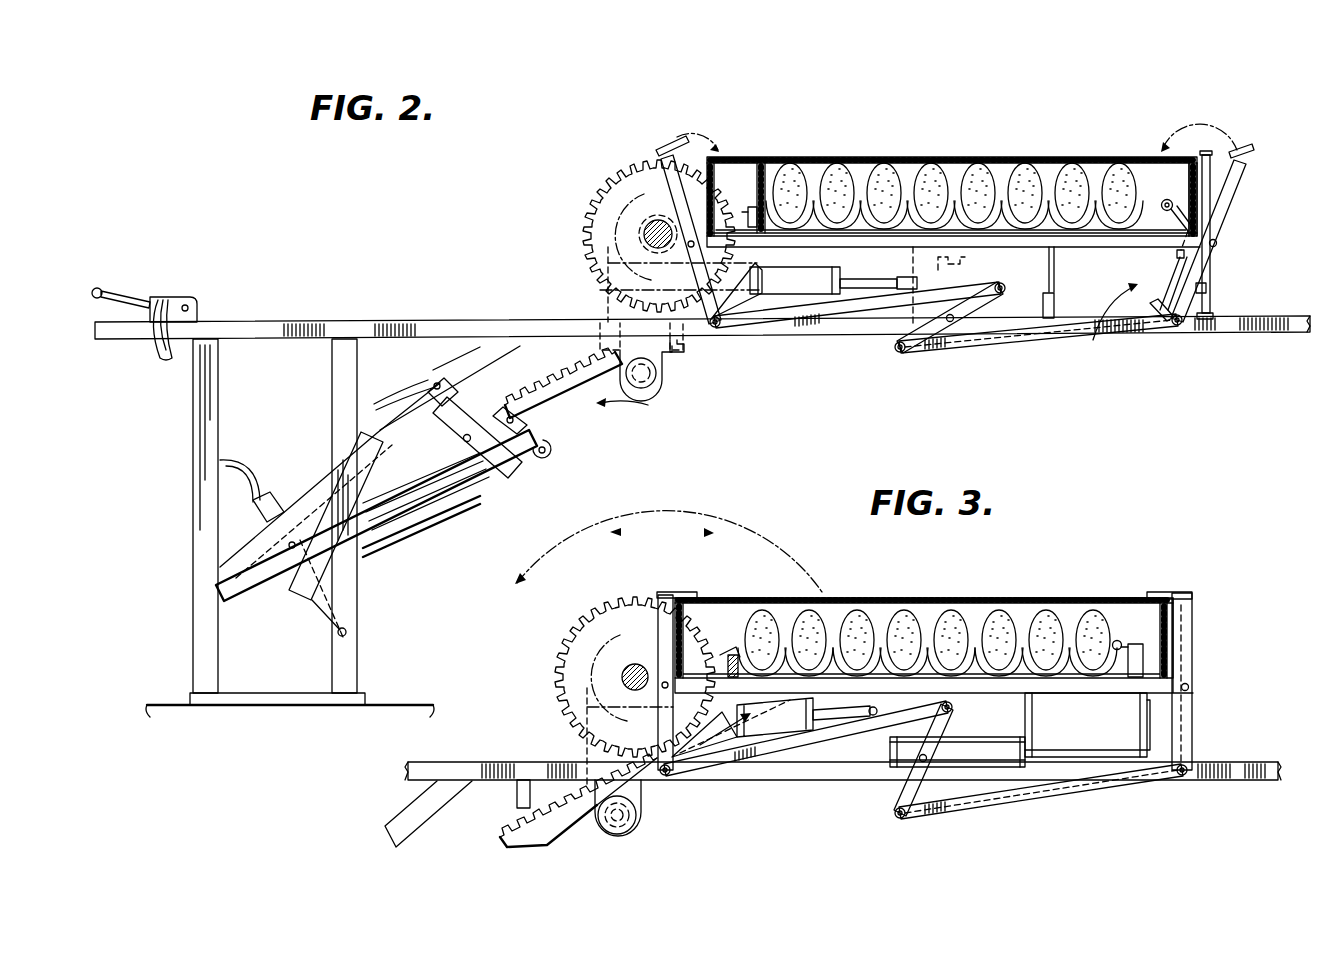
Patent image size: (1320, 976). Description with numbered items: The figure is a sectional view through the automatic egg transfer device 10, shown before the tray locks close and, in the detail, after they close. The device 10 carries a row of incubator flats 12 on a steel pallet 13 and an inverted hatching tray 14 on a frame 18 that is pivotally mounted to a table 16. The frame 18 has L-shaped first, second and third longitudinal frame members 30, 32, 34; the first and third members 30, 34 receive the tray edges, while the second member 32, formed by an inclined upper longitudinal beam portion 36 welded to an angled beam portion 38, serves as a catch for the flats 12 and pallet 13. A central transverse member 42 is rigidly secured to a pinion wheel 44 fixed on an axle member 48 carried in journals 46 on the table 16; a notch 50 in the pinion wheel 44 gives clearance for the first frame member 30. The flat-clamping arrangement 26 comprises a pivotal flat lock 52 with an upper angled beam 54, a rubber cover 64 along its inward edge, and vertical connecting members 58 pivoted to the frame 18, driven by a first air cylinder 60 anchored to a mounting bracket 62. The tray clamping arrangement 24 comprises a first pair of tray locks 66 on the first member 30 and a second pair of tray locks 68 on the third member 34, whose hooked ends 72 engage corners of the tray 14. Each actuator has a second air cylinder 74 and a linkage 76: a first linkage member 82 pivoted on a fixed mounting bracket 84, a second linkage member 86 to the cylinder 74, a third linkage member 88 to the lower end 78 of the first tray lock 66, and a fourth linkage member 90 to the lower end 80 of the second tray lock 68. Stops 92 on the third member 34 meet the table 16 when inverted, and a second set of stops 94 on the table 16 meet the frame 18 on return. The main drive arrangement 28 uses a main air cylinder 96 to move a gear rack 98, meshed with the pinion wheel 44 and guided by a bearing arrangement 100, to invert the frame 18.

In FIG. 2, the automatic egg transfer device 10 is at (1226, 332).
In FIG. 3, the automatic egg transfer device 10 is at (1155, 790).
In FIG. 2, the incubator flats 12 is at (928, 165).
In FIG. 3, the incubator flats 12 is at (1147, 668).
In FIG. 2, the steel pallet 13 is at (858, 240).
In FIG. 2, the hatching tray 14 is at (866, 157).
In FIG. 3, the hatching tray 14 is at (926, 598).
In FIG. 2, the table 16 is at (338, 323).
In FIG. 3, the table 16 is at (843, 771).
In FIG. 3, the frame 18 is at (1073, 695).
In FIG. 2, the tray clamping arrangement 24 is at (1181, 326).
In FIG. 2, the flat-clamping arrangement 26 is at (1110, 325).
In FIG. 2, the main drive arrangement 28 is at (626, 413).
In FIG. 2, the first longitudinal frame member 30 is at (699, 205).
In FIG. 2, the second longitudinal frame member 32 is at (770, 322).
In FIG. 3, the second longitudinal frame member 32 is at (722, 660).
In FIG. 2, the third longitudinal frame member 34 is at (1200, 232).
In FIG. 2, the upper longitudinal beam portion 36 is at (760, 163).
In FIG. 2, the angled beam portion 38 is at (750, 212).
In FIG. 2, the central transverse member 42 is at (806, 230).
In FIG. 2, the pinion wheel 44 is at (596, 202).
In FIG. 3, the pinion wheel 44 is at (584, 636).
In FIG. 2, the journals 46 is at (600, 254).
In FIG. 2, the axle member 48 is at (644, 232).
In FIG. 3, the axle member 48 is at (622, 678).
In FIG. 2, the notch 50 is at (662, 219).
In FIG. 2, the pivotal flat lock 52 is at (1176, 204).
In FIG. 2, the upper angled beam 54 is at (1193, 218).
In FIG. 3, the upper angled beam 54 is at (1128, 648).
In FIG. 2, the vertical connecting members 58 is at (1206, 288).
In FIG. 2, the first air cylinder 60 is at (1010, 340).
In FIG. 3, the first air cylinder 60 is at (990, 772).
In FIG. 2, the mounting bracket 62 is at (1055, 264).
In FIG. 2, the rubber cover 64 is at (1178, 255).
In FIG. 2, the first pair of tray locks 66 is at (660, 150).
In FIG. 3, the first pair of tray locks 66 is at (667, 598).
In FIG. 2, the second pair of tray locks 68 is at (1246, 152).
In FIG. 3, the second pair of tray locks 68 is at (1194, 603).
In FIG. 2, the hooked ends 72 is at (1192, 126).
In FIG. 2, the second air cylinder 74 is at (832, 296).
In FIG. 3, the second air cylinder 74 is at (787, 714).
In FIG. 2, the linkage 76 is at (906, 348).
In FIG. 3, the linkage 76 is at (900, 788).
In FIG. 2, the lower end of first tray lock 78 is at (684, 343).
In FIG. 2, the lower end of second tray lock 80 is at (1165, 325).
In FIG. 2, the first linkage member 82 is at (958, 330).
In FIG. 2, the fixed mounting bracket 84 is at (966, 264).
In FIG. 2, the second linkage member 86 is at (912, 262).
In FIG. 2, the third linkage member 88 is at (750, 325).
In FIG. 3, the third linkage member 88 is at (808, 738).
In FIG. 2, the fourth linkage member 90 is at (1040, 336).
In FIG. 2, the stops 92 is at (1212, 176).
In FIG. 2, the second set of stops 94 is at (1213, 305).
In FIG. 2, the main air cylinder 96 is at (376, 491).
In FIG. 2, the gear rack 98 is at (568, 400).
In FIG. 3, the gear rack 98 is at (508, 830).
In FIG. 2, the bearing arrangement 100 is at (660, 376).
In FIG. 3, the bearing arrangement 100 is at (618, 808).